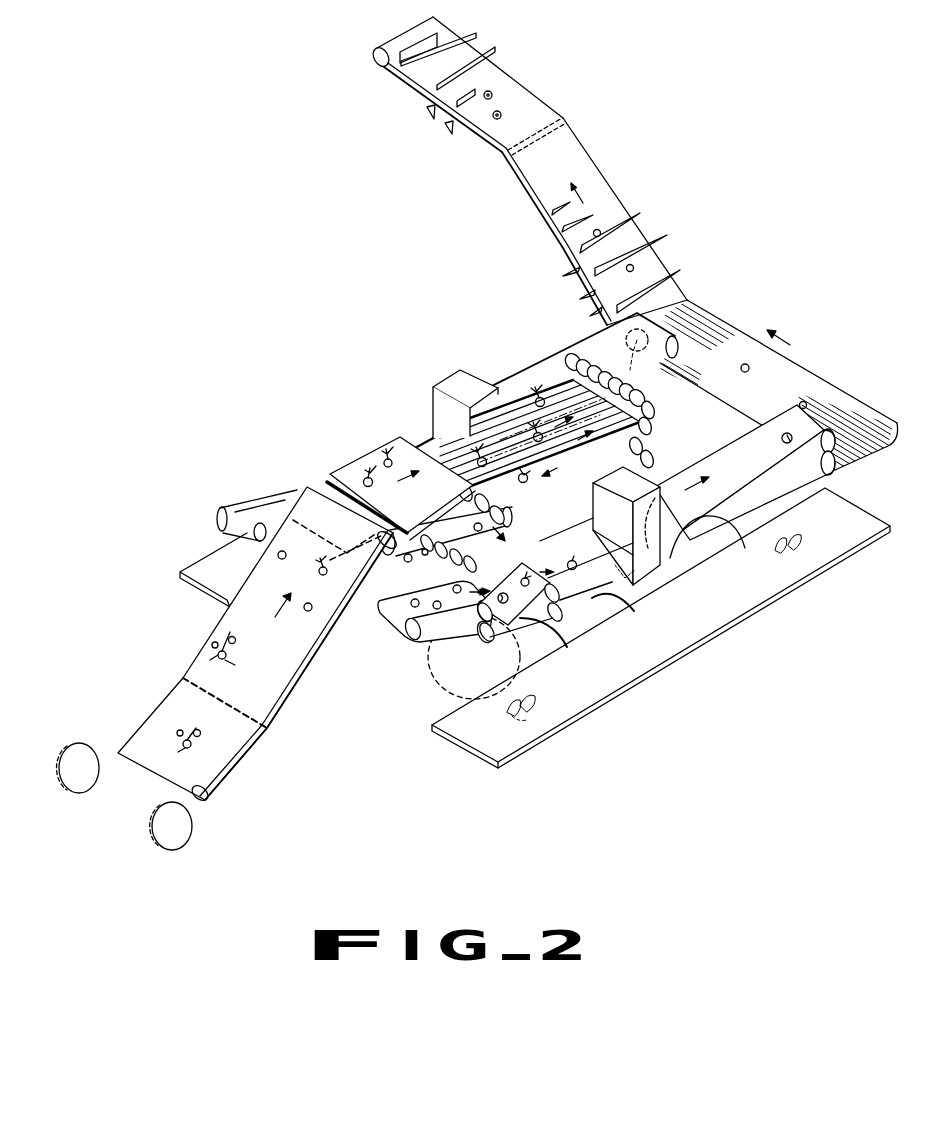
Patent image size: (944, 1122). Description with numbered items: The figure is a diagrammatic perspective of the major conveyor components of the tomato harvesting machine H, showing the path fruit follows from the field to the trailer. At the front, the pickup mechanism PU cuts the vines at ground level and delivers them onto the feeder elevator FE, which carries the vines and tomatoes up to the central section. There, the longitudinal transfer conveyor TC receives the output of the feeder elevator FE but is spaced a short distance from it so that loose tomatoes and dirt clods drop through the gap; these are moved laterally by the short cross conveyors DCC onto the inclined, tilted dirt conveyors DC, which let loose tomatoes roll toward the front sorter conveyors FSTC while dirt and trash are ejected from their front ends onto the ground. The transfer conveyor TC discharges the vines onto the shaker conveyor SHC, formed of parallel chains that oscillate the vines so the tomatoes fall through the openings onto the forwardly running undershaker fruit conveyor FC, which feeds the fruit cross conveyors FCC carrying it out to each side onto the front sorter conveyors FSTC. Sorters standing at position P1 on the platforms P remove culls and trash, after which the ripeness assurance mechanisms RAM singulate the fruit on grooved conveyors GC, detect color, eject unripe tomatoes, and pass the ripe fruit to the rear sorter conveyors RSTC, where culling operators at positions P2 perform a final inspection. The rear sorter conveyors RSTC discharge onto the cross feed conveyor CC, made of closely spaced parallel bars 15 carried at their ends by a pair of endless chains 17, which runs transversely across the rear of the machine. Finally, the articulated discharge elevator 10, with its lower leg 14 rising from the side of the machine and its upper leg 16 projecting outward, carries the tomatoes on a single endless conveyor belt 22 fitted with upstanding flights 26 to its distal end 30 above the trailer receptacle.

The discharge elevator 10 is at (592, 108).
The lower portion, or leg 14 is at (602, 177).
The upper portion, or leg 16 is at (513, 77).
The endless conveyor belt 22 is at (573, 148).
The upstanding flights 26 is at (430, 115).
The distal end 30 is at (396, 38).
The parallel bars 15 is at (696, 314).
The endless chains 17 is at (692, 385).
The cross feed conveyor CC is at (742, 332).
The rear sorter conveyors RSTC is at (600, 333).
The shaker conveyor SHC is at (547, 376).
The ripeness assurance mechanisms RAM is at (447, 377).
The transfer conveyor TC is at (353, 464).
The undershaker fruit conveyor FC is at (645, 427).
The dirt conveyors DC is at (233, 513).
The cross conveyors DCC is at (404, 530).
The fruit cross conveyors FCC is at (512, 572).
The grooved conveyors GC is at (632, 604).
The front sorter conveyors FSTC is at (557, 641).
The feeder elevator FE is at (280, 673).
The tomato harvesting machine H is at (150, 653).
The pickup mechanism PU is at (135, 777).
The platforms P is at (657, 663).
The position P1 is at (527, 722).
The positions P2 is at (803, 535).